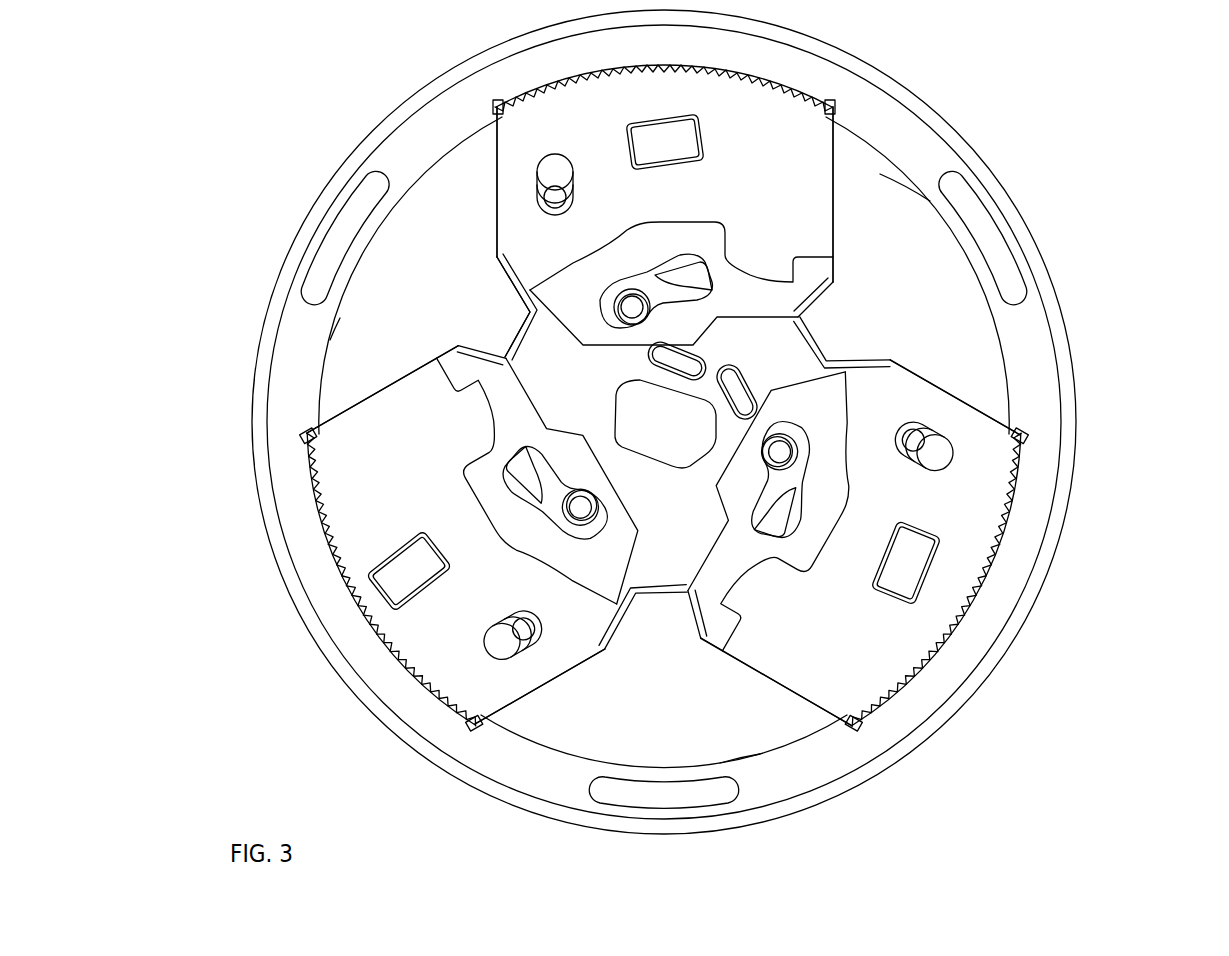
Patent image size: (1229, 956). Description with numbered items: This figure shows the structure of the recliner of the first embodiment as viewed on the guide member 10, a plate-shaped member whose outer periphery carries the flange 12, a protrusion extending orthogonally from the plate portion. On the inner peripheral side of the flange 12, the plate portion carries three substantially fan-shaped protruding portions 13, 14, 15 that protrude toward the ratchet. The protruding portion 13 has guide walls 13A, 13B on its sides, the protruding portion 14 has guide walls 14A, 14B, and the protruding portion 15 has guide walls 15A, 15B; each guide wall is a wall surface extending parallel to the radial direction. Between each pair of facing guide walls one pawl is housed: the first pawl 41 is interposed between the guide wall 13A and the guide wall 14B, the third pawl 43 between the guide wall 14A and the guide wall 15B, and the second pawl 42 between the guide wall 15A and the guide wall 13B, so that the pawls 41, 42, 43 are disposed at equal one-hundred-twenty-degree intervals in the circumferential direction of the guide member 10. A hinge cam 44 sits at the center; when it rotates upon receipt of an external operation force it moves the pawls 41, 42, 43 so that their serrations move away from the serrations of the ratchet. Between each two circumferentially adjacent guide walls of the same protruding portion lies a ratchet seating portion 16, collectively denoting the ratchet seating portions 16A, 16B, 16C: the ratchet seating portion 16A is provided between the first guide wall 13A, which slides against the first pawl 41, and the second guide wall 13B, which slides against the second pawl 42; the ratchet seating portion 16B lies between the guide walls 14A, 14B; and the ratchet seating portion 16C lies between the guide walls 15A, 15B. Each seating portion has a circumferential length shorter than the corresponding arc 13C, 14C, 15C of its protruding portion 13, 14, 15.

The guide member 10 is at (1060, 280).
The flange 12 is at (937, 122).
The protruding portion 13 is at (967, 343).
The guide wall 13A is at (957, 392).
The guide wall 13B is at (835, 188).
The arc 13C is at (913, 193).
The protruding portion 14 is at (737, 718).
The guide wall 14A is at (553, 678).
The guide wall 14B is at (793, 690).
The arc 14C is at (733, 757).
The protruding portion 15 is at (435, 207).
The guide wall 15A is at (490, 178).
The guide wall 15B is at (373, 393).
The arc 15C is at (333, 318).
The ratchet seating portion 16 is at (654, 530).
The ratchet seating portion 16A is at (983, 234).
The ratchet seating portion 16B is at (663, 797).
The ratchet seating portion 16C is at (345, 235).
The first pawl 41 is at (972, 487).
The second pawl 42 is at (778, 138).
The third pawl 43 is at (370, 497).
The hinge cam 44 is at (555, 355).